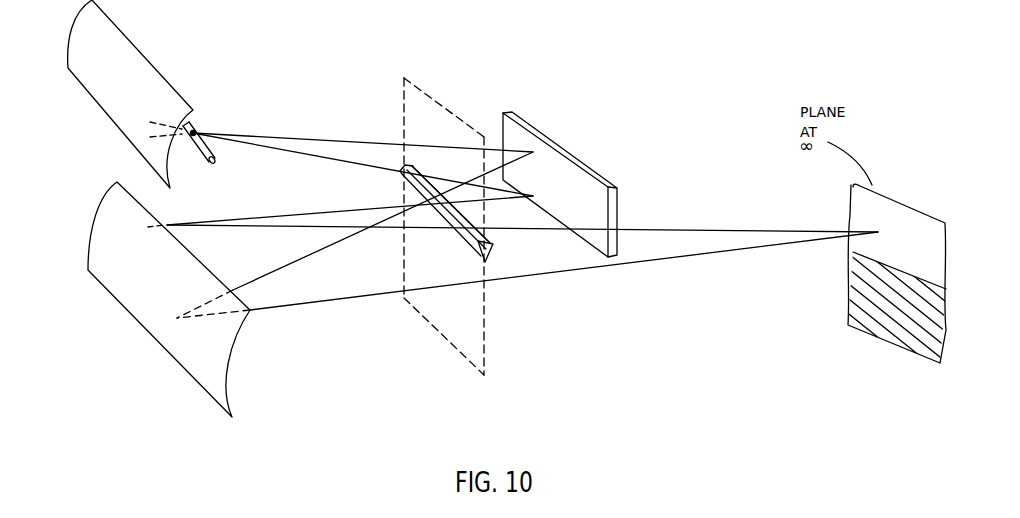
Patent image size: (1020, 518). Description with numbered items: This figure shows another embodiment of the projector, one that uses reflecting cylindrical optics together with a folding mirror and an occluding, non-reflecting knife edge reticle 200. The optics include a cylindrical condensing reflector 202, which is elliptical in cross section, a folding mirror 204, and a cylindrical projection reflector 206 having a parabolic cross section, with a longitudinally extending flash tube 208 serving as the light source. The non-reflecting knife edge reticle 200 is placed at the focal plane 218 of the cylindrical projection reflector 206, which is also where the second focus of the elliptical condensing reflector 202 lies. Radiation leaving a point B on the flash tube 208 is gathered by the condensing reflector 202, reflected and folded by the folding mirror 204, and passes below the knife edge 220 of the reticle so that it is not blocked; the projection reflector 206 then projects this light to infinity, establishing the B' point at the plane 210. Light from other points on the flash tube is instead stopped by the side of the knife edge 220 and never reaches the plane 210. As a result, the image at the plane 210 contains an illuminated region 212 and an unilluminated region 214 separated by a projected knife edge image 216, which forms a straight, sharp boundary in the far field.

The non-reflecting knife edge reticle 200 is at (470, 264).
The cylindrical condensing reflector 202 is at (138, 45).
The folding mirror 204 is at (570, 150).
The cylindrical projection reflector 206 is at (233, 362).
The flash tube 208 is at (218, 163).
The plane 210 is at (908, 352).
The illuminated region 212 is at (905, 218).
The unilluminated region 214 is at (880, 318).
The projected knife edge image 216 is at (852, 253).
The focal plane 218 is at (488, 308).
The knife edge 220 is at (452, 243).
The point B is at (225, 112).
The B' point B' is at (845, 211).